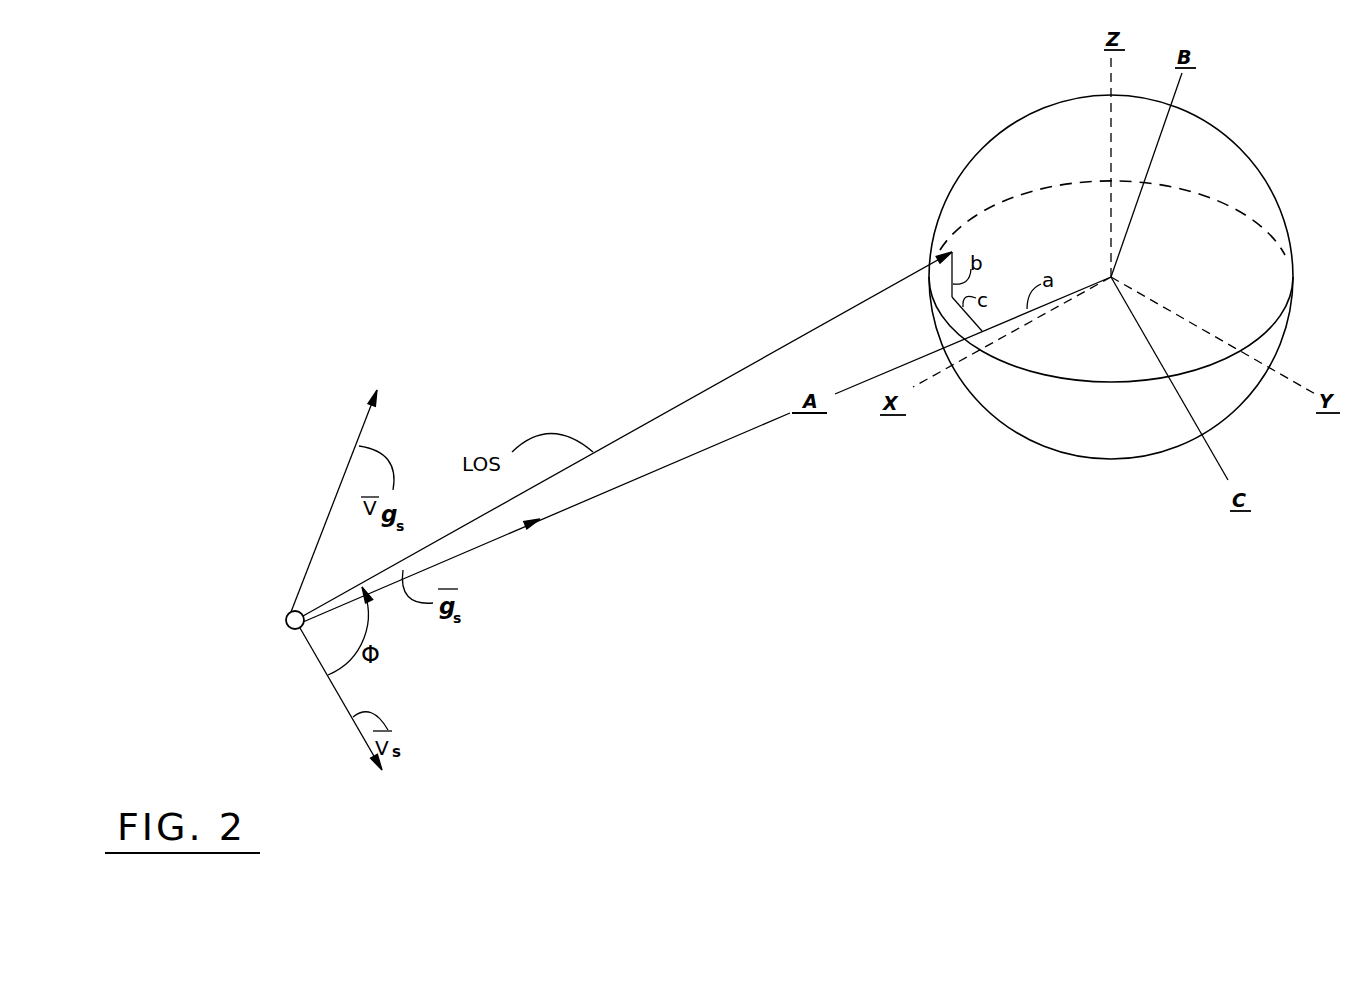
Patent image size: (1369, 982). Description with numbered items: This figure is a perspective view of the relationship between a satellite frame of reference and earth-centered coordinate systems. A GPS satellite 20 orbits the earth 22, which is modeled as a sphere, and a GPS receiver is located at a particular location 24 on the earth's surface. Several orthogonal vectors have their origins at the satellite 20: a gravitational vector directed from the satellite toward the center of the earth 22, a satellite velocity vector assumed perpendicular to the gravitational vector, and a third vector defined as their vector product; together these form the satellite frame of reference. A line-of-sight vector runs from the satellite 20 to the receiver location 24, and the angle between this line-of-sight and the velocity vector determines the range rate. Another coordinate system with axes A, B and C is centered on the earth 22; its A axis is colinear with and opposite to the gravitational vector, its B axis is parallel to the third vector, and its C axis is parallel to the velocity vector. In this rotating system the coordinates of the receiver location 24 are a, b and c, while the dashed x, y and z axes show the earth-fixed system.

The GPS satellite 20 is at (284, 620).
The earth 22 is at (1200, 147).
The receiver location 24 is at (948, 250).